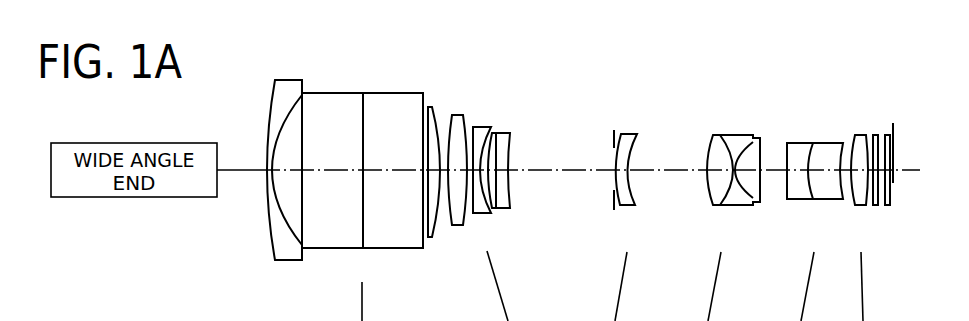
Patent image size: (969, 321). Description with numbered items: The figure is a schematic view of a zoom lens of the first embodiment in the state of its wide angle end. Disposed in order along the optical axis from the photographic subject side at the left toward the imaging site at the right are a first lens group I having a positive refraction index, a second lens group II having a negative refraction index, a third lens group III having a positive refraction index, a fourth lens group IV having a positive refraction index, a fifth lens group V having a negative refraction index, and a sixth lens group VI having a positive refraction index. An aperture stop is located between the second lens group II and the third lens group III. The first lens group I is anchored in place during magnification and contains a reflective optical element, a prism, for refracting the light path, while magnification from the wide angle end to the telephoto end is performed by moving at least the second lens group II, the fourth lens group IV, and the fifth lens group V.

The first lens group I is at (361, 177).
The second lens group II is at (494, 177).
The third lens group III is at (625, 177).
The fourth lens group IV is at (736, 177).
The fifth lens group V is at (812, 177).
The sixth lens group VI is at (869, 177).